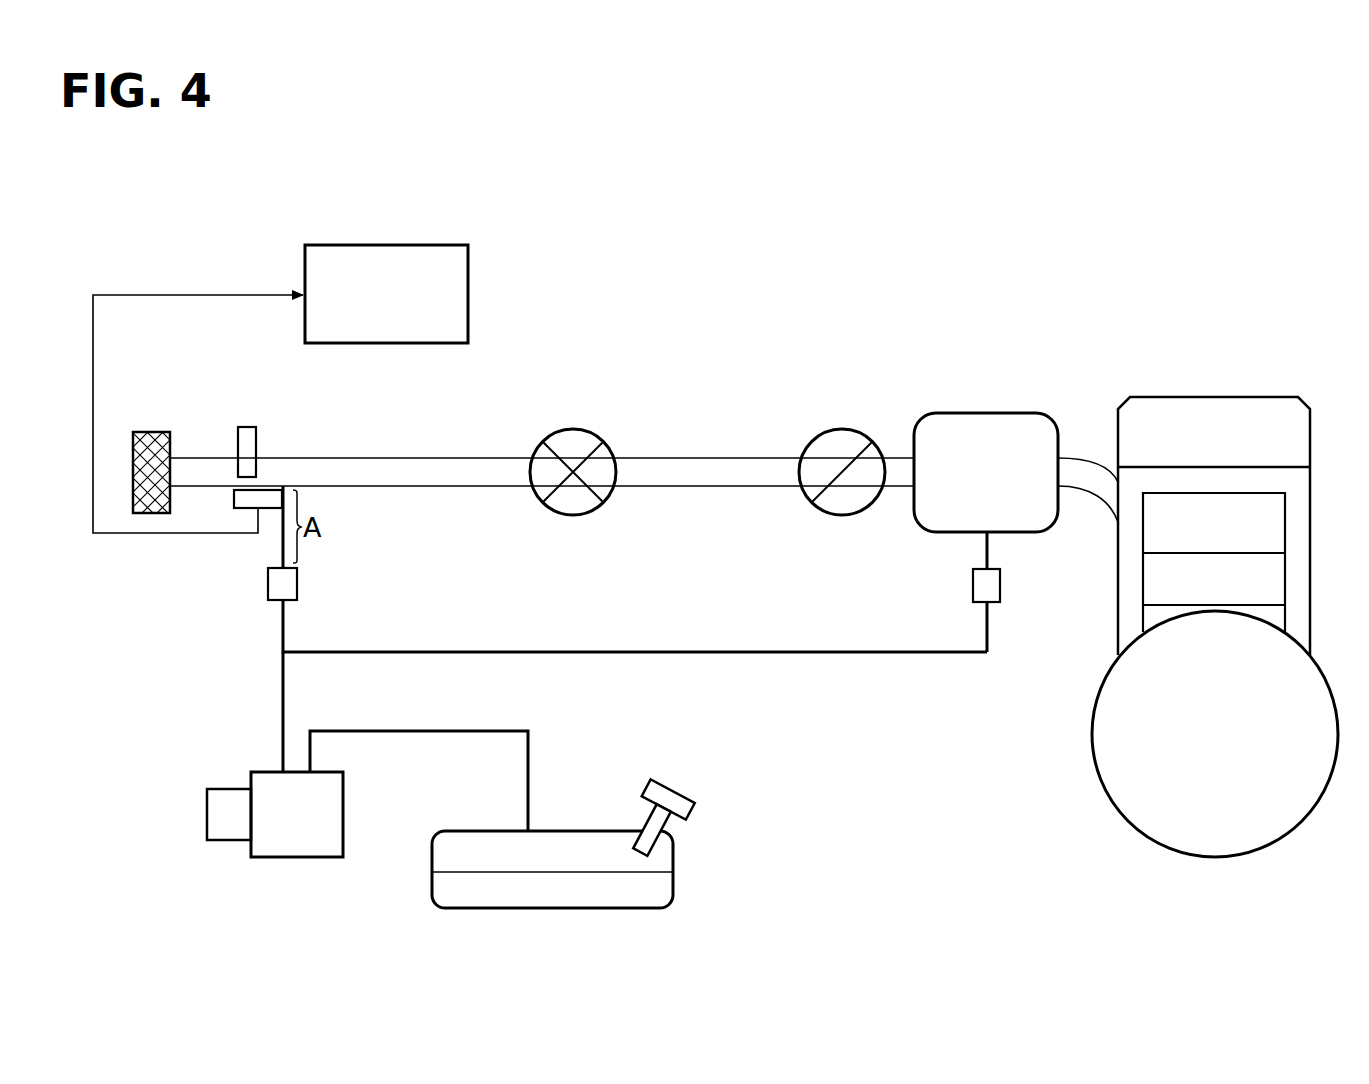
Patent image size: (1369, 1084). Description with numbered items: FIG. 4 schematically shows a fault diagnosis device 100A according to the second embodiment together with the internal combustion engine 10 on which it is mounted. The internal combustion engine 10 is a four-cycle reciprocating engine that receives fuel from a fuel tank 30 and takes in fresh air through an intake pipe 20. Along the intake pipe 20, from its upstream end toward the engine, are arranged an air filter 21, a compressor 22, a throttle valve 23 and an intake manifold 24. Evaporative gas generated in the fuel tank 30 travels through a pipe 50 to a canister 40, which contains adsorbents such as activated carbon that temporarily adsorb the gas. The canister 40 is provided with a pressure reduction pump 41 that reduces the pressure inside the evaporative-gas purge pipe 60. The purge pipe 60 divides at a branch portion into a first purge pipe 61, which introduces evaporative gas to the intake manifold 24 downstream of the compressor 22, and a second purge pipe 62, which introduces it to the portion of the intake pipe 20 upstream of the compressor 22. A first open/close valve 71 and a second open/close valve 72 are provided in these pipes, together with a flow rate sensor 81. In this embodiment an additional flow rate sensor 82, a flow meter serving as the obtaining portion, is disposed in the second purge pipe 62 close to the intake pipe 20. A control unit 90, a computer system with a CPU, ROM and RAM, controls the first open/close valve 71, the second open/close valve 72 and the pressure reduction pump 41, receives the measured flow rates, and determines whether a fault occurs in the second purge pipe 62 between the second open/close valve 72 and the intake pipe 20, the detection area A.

The internal combustion engine 10 is at (1210, 397).
The intake pipe 20 is at (702, 458).
The air filter 21 is at (152, 432).
The compressor 22 is at (570, 429).
The throttle valve 23 is at (840, 429).
The intake manifold 24 is at (988, 413).
The fuel tank 30 is at (673, 857).
The canister 40 is at (304, 857).
The pressure reduction pump 41 is at (230, 840).
The pipe 50 is at (530, 768).
The evaporative-gas purge pipe 60 is at (282, 692).
The first purge pipe 61 is at (985, 625).
The second purge pipe 62 is at (282, 620).
The first open/close valve 71 is at (1000, 586).
The second open/close valve 72 is at (297, 583).
The flow rate sensor 81 is at (256, 443).
The flow rate sensor 82 is at (234, 500).
The control unit 90 is at (406, 245).
The fault diagnosis device 100A is at (512, 258).